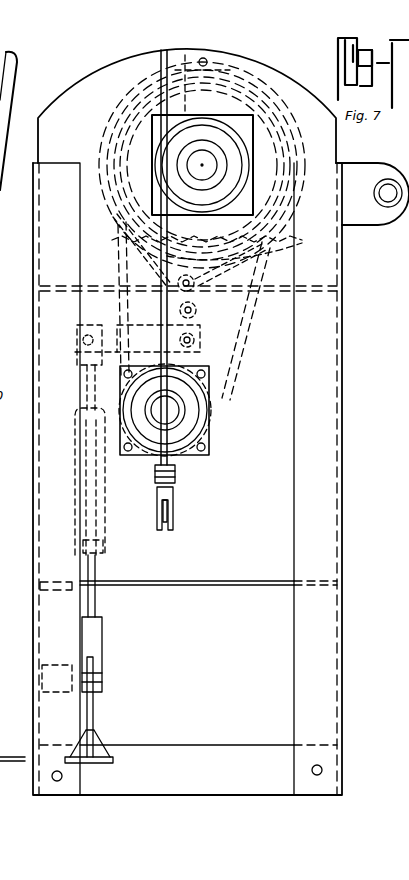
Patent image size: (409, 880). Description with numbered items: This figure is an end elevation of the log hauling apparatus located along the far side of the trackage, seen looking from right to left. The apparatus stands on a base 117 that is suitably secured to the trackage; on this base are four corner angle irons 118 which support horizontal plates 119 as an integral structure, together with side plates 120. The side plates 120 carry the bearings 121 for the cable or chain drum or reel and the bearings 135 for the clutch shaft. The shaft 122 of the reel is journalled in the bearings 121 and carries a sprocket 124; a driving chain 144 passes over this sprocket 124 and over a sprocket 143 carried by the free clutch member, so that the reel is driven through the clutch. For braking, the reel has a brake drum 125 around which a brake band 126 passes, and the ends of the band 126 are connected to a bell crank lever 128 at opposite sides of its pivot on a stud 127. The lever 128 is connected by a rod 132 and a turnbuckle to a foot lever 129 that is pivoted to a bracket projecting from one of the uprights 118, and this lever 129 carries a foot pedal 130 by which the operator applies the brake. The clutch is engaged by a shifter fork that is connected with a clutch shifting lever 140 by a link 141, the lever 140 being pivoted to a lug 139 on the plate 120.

The base 117 is at (210, 750).
The corner angle irons 118 is at (328, 412).
The horizontal plates 119 is at (282, 295).
The side plates 120 is at (85, 88).
The bearings 121 is at (190, 191).
The shaft 122 is at (204, 150).
The sprocket 124 is at (118, 246).
The brake drum 125 is at (219, 249).
The brake band 126 is at (282, 241).
The stud 127 is at (200, 307).
The bell crank lever 128 is at (134, 332).
The foot lever 129 is at (92, 705).
The foot pedal 130 is at (100, 758).
The rod 132 is at (77, 396).
The bearings 135 is at (188, 427).
The lug 139 is at (155, 478).
The clutch shifting lever 140 is at (175, 488).
The link 141 is at (169, 512).
The sprocket 143 is at (214, 396).
The driving chain 144 is at (238, 358).